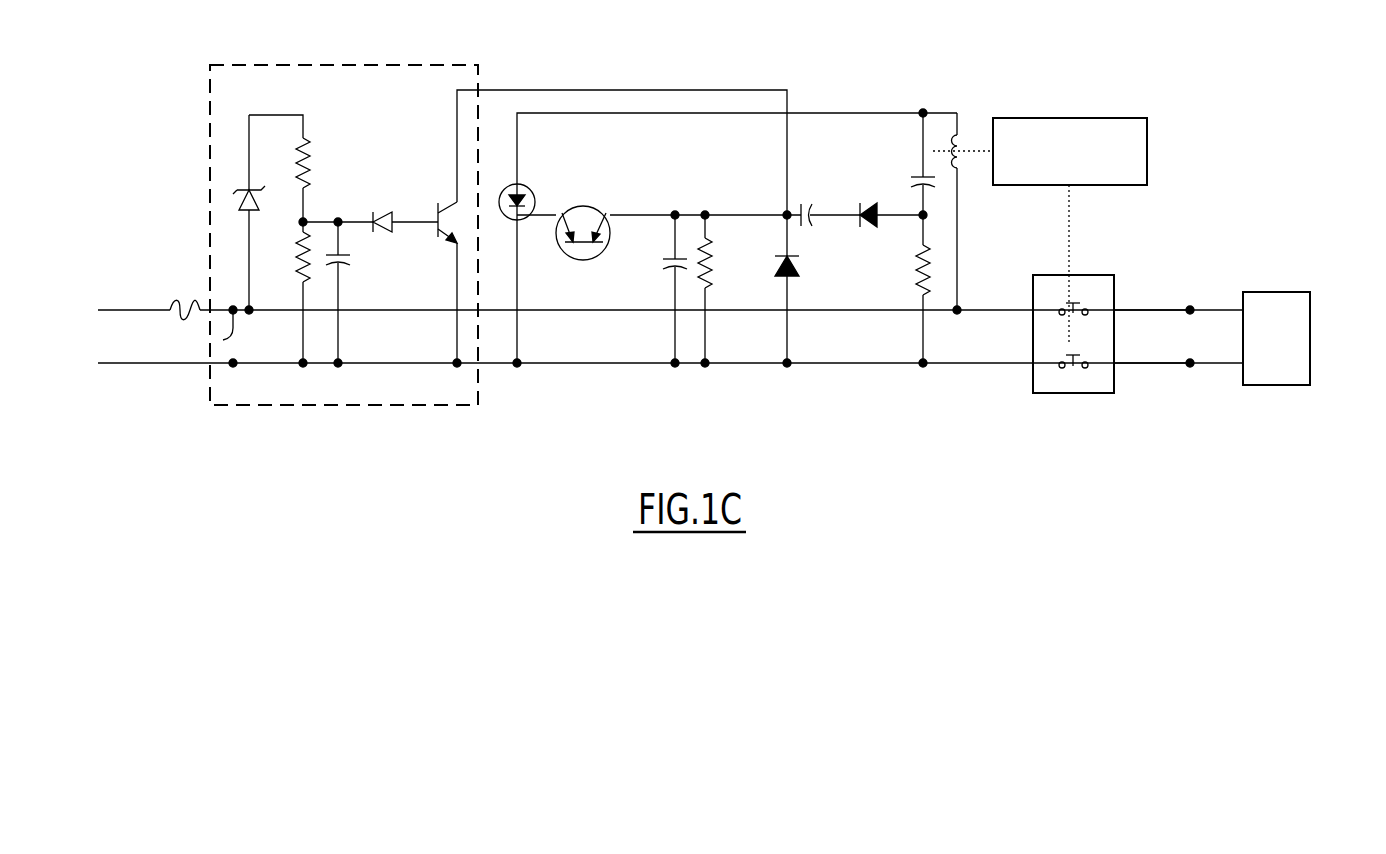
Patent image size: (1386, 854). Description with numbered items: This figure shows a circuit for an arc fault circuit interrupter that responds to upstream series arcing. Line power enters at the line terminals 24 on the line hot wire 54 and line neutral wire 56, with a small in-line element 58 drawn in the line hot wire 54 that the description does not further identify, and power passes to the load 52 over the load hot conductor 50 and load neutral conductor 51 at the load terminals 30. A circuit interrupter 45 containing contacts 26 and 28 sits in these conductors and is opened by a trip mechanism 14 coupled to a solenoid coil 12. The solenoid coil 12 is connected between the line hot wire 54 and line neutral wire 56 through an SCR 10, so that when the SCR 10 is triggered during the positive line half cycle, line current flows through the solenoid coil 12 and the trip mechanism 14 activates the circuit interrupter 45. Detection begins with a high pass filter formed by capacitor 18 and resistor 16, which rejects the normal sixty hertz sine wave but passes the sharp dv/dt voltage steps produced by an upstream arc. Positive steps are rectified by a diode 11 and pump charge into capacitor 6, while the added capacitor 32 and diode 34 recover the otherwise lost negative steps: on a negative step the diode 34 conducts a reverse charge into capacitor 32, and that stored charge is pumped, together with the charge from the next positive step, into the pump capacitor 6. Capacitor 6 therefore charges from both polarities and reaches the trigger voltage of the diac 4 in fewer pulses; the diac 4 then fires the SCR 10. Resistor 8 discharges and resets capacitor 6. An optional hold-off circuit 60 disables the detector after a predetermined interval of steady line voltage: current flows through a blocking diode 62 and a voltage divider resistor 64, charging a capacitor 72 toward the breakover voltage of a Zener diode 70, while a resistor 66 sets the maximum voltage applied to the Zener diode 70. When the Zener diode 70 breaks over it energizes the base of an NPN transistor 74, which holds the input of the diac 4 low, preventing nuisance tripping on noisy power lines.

The diac 4 is at (600, 212).
The pump capacitor 6 is at (666, 282).
The resistor 8 is at (714, 264).
The SCR 10 is at (522, 190).
The diode 11 is at (872, 228).
The solenoid coil 12 is at (960, 140).
The trip mechanism 14 is at (1122, 118).
The resistor 16 is at (916, 274).
The capacitor 18 is at (918, 178).
The line terminals 24 is at (233, 363).
The contact 26 is at (1064, 302).
The contact 28 is at (1060, 362).
The load terminals 30 is at (1190, 310).
The capacitor 32 is at (808, 210).
The diode 34 is at (776, 272).
The circuit interrupter 45 is at (1100, 276).
The load hot conductor 50 is at (1126, 310).
The load neutral conductor 51 is at (1126, 363).
The load 52 is at (1310, 310).
The line hot wire 54 is at (120, 310).
The line neutral wire 56 is at (118, 363).
The fuse 58 is at (180, 305).
The hold-off circuit 60 is at (210, 98).
The blocking diode 62 is at (238, 208).
The voltage divider resistor 64 is at (306, 160).
The resistor 66 is at (300, 276).
The Zener diode 70 is at (382, 212).
The capacitor 72 is at (350, 266).
The NPN transistor 74 is at (450, 252).